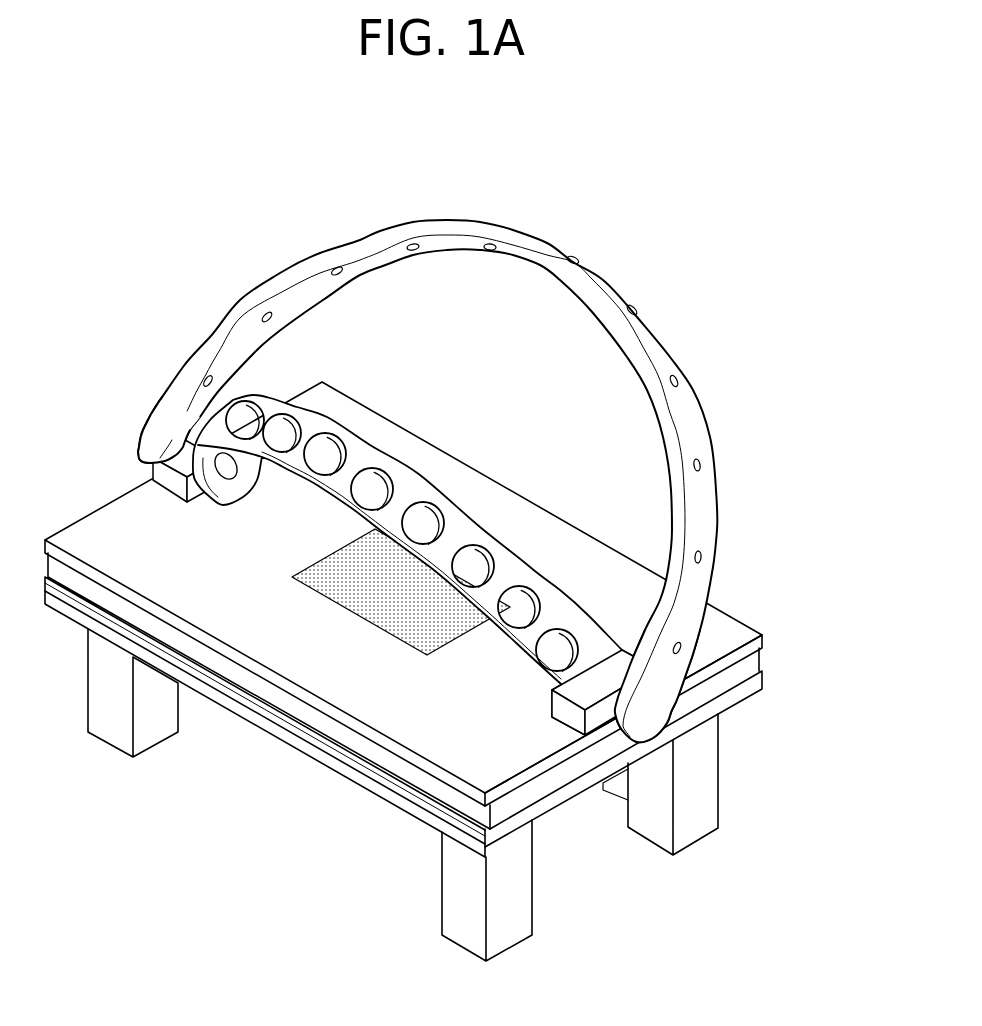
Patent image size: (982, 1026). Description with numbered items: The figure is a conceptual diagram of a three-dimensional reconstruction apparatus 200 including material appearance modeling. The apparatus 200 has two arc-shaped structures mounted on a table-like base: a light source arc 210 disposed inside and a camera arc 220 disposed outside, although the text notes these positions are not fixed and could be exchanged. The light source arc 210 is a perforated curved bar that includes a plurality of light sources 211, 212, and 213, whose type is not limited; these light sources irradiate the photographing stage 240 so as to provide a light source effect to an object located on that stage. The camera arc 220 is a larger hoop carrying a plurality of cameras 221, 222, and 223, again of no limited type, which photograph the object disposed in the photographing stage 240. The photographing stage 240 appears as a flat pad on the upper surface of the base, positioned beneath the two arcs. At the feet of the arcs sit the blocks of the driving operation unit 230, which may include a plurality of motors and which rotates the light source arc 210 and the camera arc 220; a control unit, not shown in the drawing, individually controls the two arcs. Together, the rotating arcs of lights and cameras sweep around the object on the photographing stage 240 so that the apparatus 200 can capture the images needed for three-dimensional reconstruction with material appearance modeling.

The 3D reconstruction apparatus 200 is at (107, 133).
The light source arc 210 is at (373, 515).
The light source 211 is at (290, 417).
The light source 212 is at (334, 437).
The light source 213 is at (380, 466).
The camera arc 220 is at (460, 437).
The camera 221 is at (412, 246).
The camera 222 is at (336, 270).
The camera 223 is at (266, 315).
The driving operation unit 230 is at (608, 675).
The photographing stage 240 is at (393, 607).